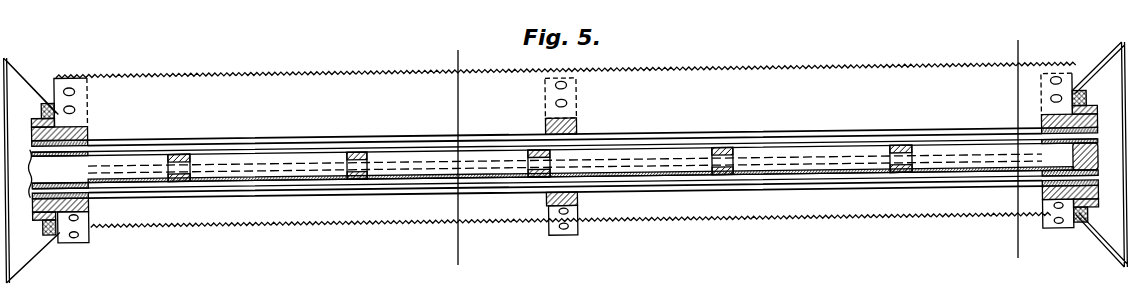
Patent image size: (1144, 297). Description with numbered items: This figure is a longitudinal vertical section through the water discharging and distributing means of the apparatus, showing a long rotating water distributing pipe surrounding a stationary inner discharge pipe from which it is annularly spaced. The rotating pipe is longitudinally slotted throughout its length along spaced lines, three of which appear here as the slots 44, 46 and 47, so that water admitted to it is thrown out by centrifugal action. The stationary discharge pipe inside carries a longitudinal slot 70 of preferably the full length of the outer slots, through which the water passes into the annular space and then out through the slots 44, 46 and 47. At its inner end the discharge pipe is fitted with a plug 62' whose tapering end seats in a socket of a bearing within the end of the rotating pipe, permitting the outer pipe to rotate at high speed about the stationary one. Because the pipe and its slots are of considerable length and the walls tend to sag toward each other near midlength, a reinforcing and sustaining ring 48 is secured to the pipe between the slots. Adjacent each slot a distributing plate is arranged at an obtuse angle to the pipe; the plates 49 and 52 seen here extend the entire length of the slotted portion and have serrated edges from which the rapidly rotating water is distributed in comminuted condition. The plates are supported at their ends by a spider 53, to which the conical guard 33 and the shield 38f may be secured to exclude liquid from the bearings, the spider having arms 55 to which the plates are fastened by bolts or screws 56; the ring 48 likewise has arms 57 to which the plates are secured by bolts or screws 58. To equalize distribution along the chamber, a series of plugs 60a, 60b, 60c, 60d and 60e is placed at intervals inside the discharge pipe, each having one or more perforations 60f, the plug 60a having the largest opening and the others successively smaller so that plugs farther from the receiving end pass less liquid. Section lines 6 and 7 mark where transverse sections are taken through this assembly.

The guard 33 is at (27, 65).
The shield 38f is at (1100, 65).
The spider 53 is at (88, 122).
The plug 62' is at (1093, 124).
The longitudinal slot 44 is at (240, 136).
The longitudinal slot 70 is at (288, 146).
The longitudinal slot 46 is at (268, 186).
The longitudinal slot 47 is at (312, 182).
The distributing plate 49 is at (308, 70).
The distributing plate 52 is at (318, 224).
The plug 60a is at (177, 173).
The plug 60b is at (357, 173).
The plug 60c is at (538, 174).
The plug 60d is at (718, 176).
The plug 60e is at (900, 178).
The perforation 60f is at (182, 152).
The arm 55 is at (92, 84).
The bolt or screw 56 is at (71, 82).
The arm 57 is at (580, 95).
The bolt or screw 58 is at (556, 85).
The reinforcing and sustaining ring 48 is at (580, 125).
The section line 6 is at (457, 158).
The section line 7 is at (1017, 150).